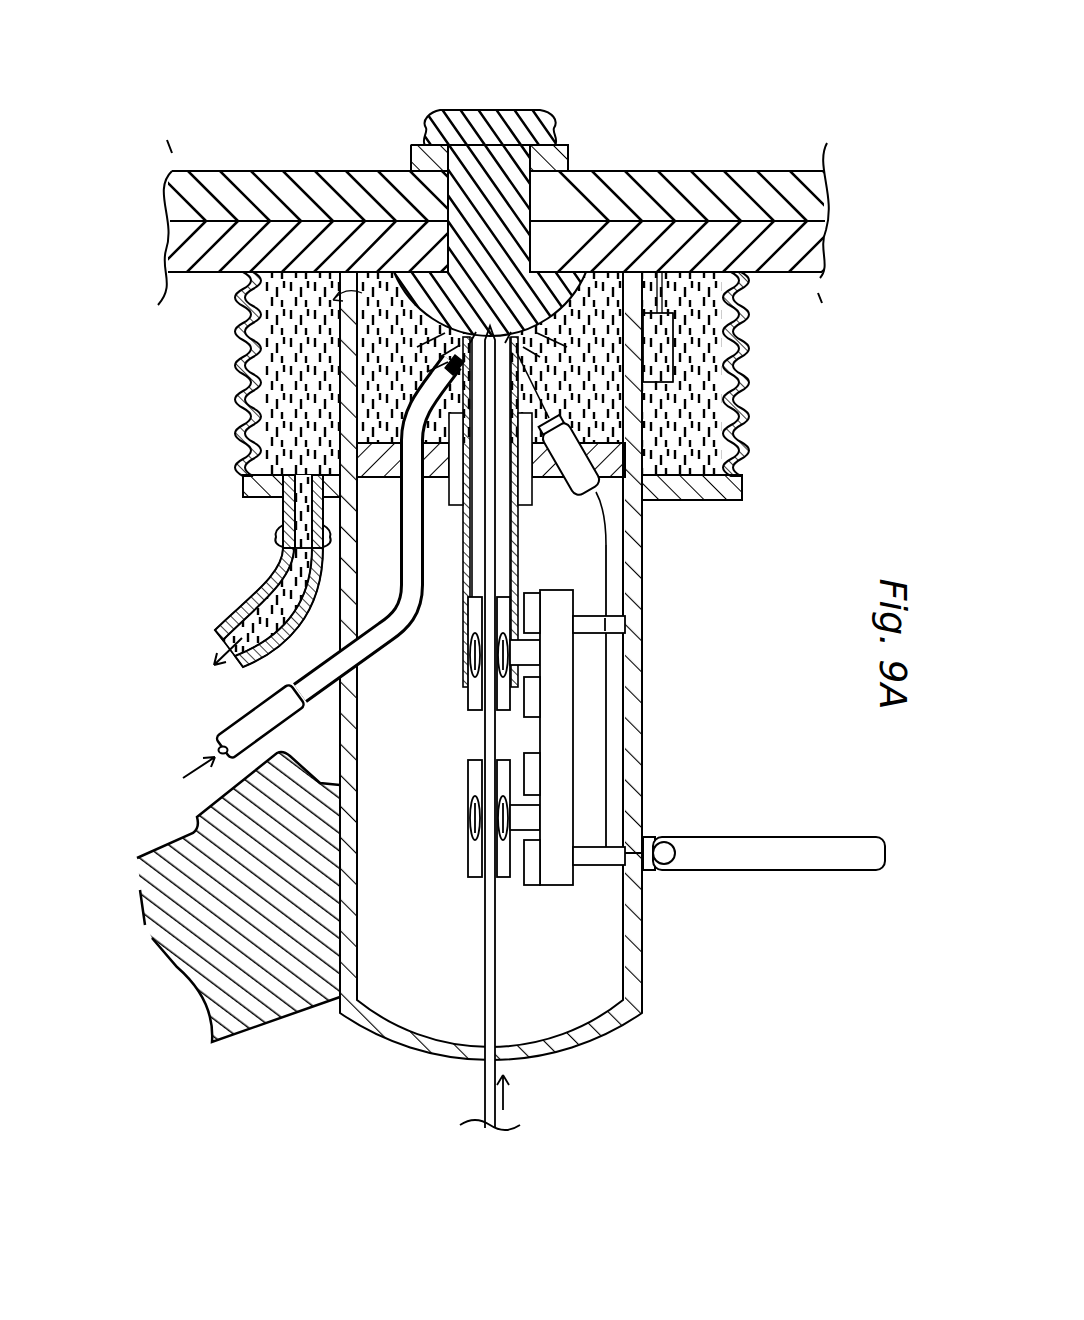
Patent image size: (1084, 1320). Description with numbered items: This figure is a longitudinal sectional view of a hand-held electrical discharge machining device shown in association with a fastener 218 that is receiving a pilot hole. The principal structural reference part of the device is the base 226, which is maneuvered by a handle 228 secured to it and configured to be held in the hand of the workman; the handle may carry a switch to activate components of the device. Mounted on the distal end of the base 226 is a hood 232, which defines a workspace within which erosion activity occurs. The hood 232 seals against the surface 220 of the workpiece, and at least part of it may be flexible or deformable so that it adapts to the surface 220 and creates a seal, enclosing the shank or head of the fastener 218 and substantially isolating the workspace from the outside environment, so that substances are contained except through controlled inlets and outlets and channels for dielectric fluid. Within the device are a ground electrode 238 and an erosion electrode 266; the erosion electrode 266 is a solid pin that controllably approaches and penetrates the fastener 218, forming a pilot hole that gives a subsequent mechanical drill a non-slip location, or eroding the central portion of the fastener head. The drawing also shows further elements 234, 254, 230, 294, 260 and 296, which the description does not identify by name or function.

The fastener 218 is at (533, 120).
The surface 220 is at (200, 360).
The hood 232 is at (745, 407).
The drain tube 234 is at (298, 512).
The flow direction arrow 254 is at (250, 713).
The supply tube 230 is at (217, 822).
The handle 228 is at (177, 847).
The sensor 294 is at (588, 484).
The ground electrode 238 is at (520, 512).
The erosion electrode 266 is at (497, 543).
The base 226 is at (633, 640).
The drive assembly 260 is at (560, 653).
The handle 296 is at (798, 862).